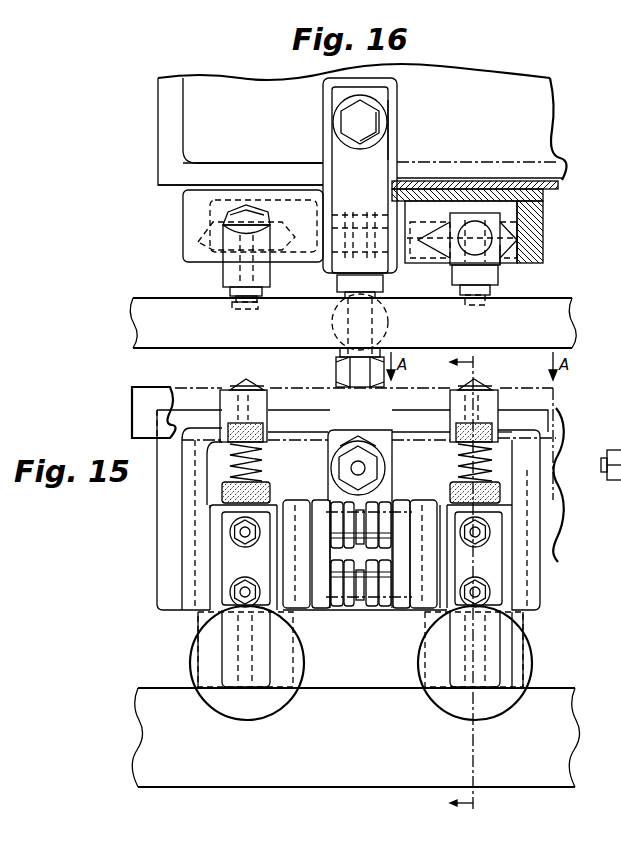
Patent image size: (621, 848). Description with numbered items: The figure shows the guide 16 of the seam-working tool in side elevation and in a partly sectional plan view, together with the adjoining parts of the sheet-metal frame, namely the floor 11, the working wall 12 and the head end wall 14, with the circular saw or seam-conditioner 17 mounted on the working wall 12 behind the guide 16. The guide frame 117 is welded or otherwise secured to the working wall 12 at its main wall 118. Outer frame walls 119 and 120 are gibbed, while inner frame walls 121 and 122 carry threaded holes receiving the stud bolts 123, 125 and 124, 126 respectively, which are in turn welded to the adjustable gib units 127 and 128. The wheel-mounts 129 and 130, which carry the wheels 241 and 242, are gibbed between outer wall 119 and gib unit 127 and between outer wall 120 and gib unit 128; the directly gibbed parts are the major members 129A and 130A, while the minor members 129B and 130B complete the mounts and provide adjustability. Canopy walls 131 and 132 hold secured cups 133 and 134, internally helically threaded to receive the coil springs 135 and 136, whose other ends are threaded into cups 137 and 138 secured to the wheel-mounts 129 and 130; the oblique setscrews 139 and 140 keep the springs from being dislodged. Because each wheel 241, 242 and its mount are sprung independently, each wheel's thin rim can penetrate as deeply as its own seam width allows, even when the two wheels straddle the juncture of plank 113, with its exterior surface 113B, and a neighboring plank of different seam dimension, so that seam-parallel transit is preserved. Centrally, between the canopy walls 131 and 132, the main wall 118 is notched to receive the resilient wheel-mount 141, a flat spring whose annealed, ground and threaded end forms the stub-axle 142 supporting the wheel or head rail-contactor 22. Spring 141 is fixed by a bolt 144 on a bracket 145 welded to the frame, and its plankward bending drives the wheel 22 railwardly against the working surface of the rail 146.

In FIG. 16, the floor 11 is at (362, 122).
In FIG. 16, the working wall 12 is at (231, 170).
In FIG. 15, the working wall 12 is at (157, 450).
In FIG. 16, the head end wall 14 is at (170, 118).
In FIG. 15, the guide 16 is at (208, 576).
In FIG. 15, the circular saw 17 is at (478, 586).
In FIG. 16, the head rail-contactor 22 is at (328, 308).
In FIG. 15, the head rail-contactor 22 is at (382, 463).
In FIG. 15, the plank 113 is at (355, 737).
In FIG. 15, the exterior surface 113B is at (160, 688).
In FIG. 15, the guide frame 117 is at (190, 462).
In FIG. 16, the main wall 118 is at (496, 186).
In FIG. 15, the main wall 118 is at (313, 455).
In FIG. 15, the outer frame wall 119 is at (185, 515).
In FIG. 16, the outer frame wall 120 is at (544, 232).
In FIG. 15, the inner frame wall 121 is at (314, 606).
In FIG. 16, the inner frame wall 122 is at (400, 205).
In FIG. 15, the inner frame wall 122 is at (397, 613).
In FIG. 15, the stud bolt 123 is at (312, 582).
In FIG. 15, the stud bolt 124 is at (405, 587).
In FIG. 15, the stud bolt 125 is at (320, 505).
In FIG. 16, the stud bolt 126 is at (410, 226).
In FIG. 15, the stud bolt 126 is at (407, 527).
In FIG. 15, the adjustable gib unit 127 is at (322, 606).
In FIG. 16, the adjustable gib unit 128 is at (419, 252).
In FIG. 15, the adjustable gib unit 128 is at (432, 612).
In FIG. 15, the wheel-mount 129 is at (247, 663).
In FIG. 15, the major member 129A is at (215, 543).
In FIG. 16, the minor member 129B is at (225, 280).
In FIG. 15, the minor member 129B is at (237, 628).
In FIG. 15, the wheel-mount 130 is at (475, 663).
In FIG. 16, the major member 130A is at (513, 234).
In FIG. 15, the major member 130A is at (512, 622).
In FIG. 16, the minor member 130B is at (498, 283).
In FIG. 15, the minor member 130B is at (490, 637).
In FIG. 16, the canopy wall 131 is at (283, 170).
In FIG. 15, the canopy wall 131 is at (213, 440).
In FIG. 15, the canopy wall 132 is at (533, 430).
In FIG. 16, the cup 133 is at (200, 242).
In FIG. 15, the cup 133 is at (226, 394).
In FIG. 15, the cup 134 is at (574, 485).
In FIG. 15, the coil spring 135 is at (265, 462).
In FIG. 15, the coil spring 136 is at (460, 454).
In FIG. 15, the cup 137 is at (268, 486).
In FIG. 15, the cup 138 is at (492, 492).
In FIG. 16, the oblique setscrew 139 is at (240, 214).
In FIG. 15, the oblique setscrew 139 is at (250, 382).
In FIG. 15, the oblique setscrew 140 is at (460, 386).
In FIG. 16, the resilient wheel-mount 141 is at (360, 188).
In FIG. 15, the resilient wheel-mount 141 is at (380, 498).
In FIG. 16, the stub-axle 142 is at (345, 335).
In FIG. 15, the stub-axle 142 is at (362, 452).
In FIG. 16, the bolt 144 is at (363, 122).
In FIG. 16, the bracket 145 is at (397, 128).
In FIG. 16, the rail 146 is at (353, 323).
In FIG. 15, the rail 146 is at (131, 430).
In FIG. 15, the wheel 241 is at (207, 657).
In FIG. 16, the wheel 242 is at (502, 256).
In FIG. 15, the wheel 242 is at (515, 667).